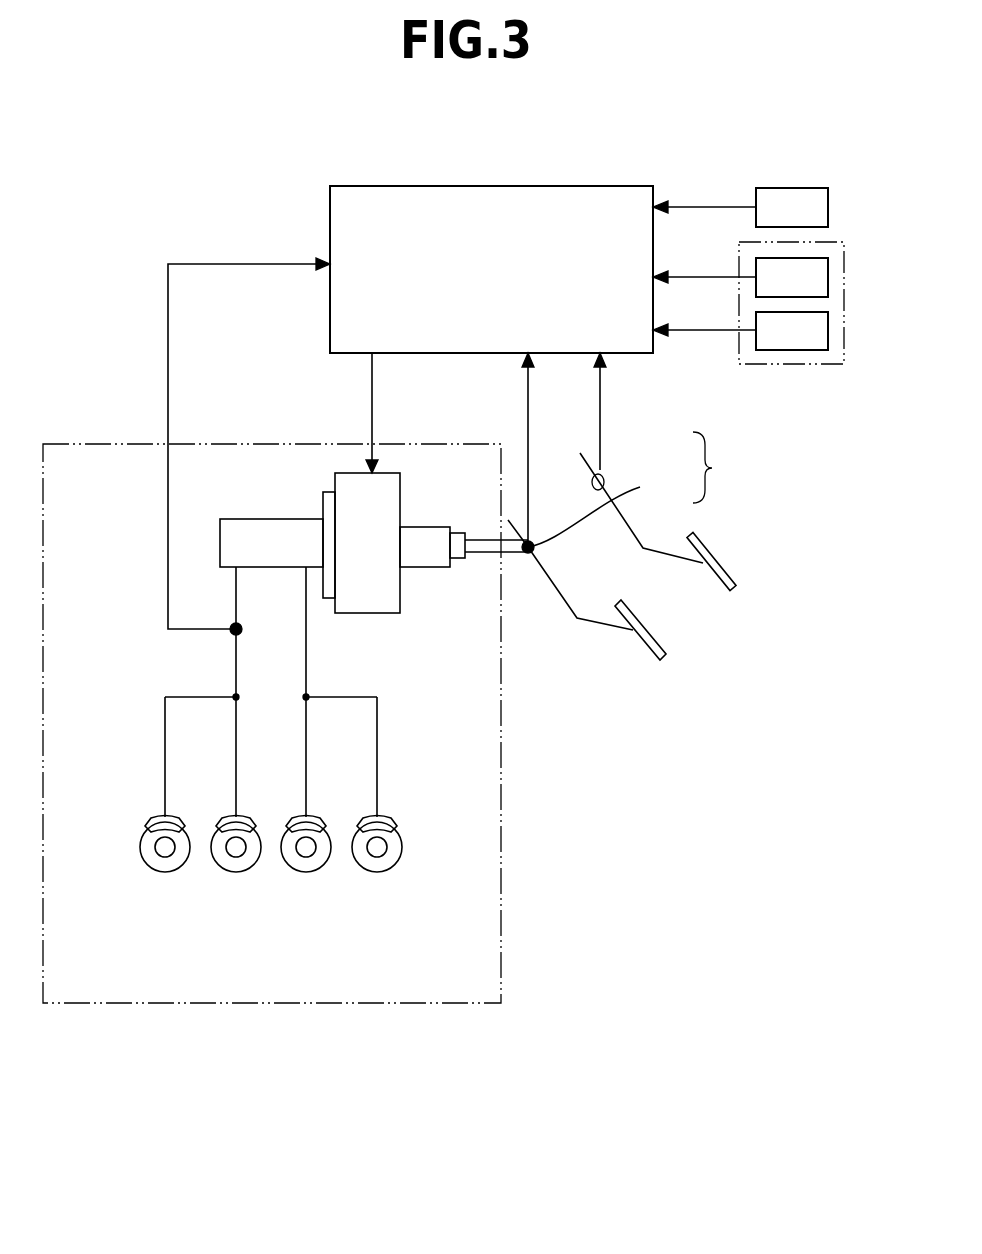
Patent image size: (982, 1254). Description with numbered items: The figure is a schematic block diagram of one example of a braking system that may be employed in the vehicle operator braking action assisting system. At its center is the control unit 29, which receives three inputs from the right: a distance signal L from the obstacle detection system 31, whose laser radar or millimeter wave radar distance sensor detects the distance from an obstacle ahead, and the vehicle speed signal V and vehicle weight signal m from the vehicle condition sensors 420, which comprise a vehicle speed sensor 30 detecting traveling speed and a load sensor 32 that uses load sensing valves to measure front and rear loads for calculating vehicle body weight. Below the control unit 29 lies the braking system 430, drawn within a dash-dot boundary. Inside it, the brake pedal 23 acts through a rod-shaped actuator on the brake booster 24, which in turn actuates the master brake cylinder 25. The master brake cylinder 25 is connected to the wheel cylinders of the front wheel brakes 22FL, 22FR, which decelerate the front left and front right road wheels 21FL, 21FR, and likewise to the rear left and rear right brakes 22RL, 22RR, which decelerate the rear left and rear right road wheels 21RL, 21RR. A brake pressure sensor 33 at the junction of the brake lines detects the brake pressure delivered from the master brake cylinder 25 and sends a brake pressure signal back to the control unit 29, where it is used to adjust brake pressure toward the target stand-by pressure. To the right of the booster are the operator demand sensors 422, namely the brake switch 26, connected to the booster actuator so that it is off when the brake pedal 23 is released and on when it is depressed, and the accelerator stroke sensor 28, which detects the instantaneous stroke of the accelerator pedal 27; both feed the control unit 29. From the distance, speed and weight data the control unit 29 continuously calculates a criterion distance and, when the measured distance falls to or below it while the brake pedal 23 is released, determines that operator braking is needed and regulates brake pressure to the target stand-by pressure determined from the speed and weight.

The control unit 29 is at (491, 269).
The obstacle detection system 31 is at (740, 206).
The vehicle speed sensor 30 is at (740, 273).
The load sensor 32 is at (740, 327).
The vehicle condition sensors 420 is at (797, 365).
The braking system 430 is at (373, 1003).
The master brake cylinder 25 is at (267, 527).
The brake booster 24 is at (402, 598).
The brake pressure sensor 33 is at (229, 634).
The brake switch 26 is at (640, 487).
The accelerator stroke sensor 28 is at (606, 478).
The operator demand sensors 422 is at (730, 467).
The accelerator pedal 27 is at (733, 578).
The brake pedal 23 is at (660, 645).
The front left road wheel 21FL is at (163, 872).
The front right road wheel 21FR is at (236, 872).
The rear left road wheel 21RL is at (306, 872).
The rear right road wheel 21RR is at (377, 872).
The front left wheel brake 22FL is at (160, 822).
The front right wheel brake 22FR is at (228, 822).
The rear left brake 22RL is at (315, 824).
The rear right brake 22RR is at (385, 824).